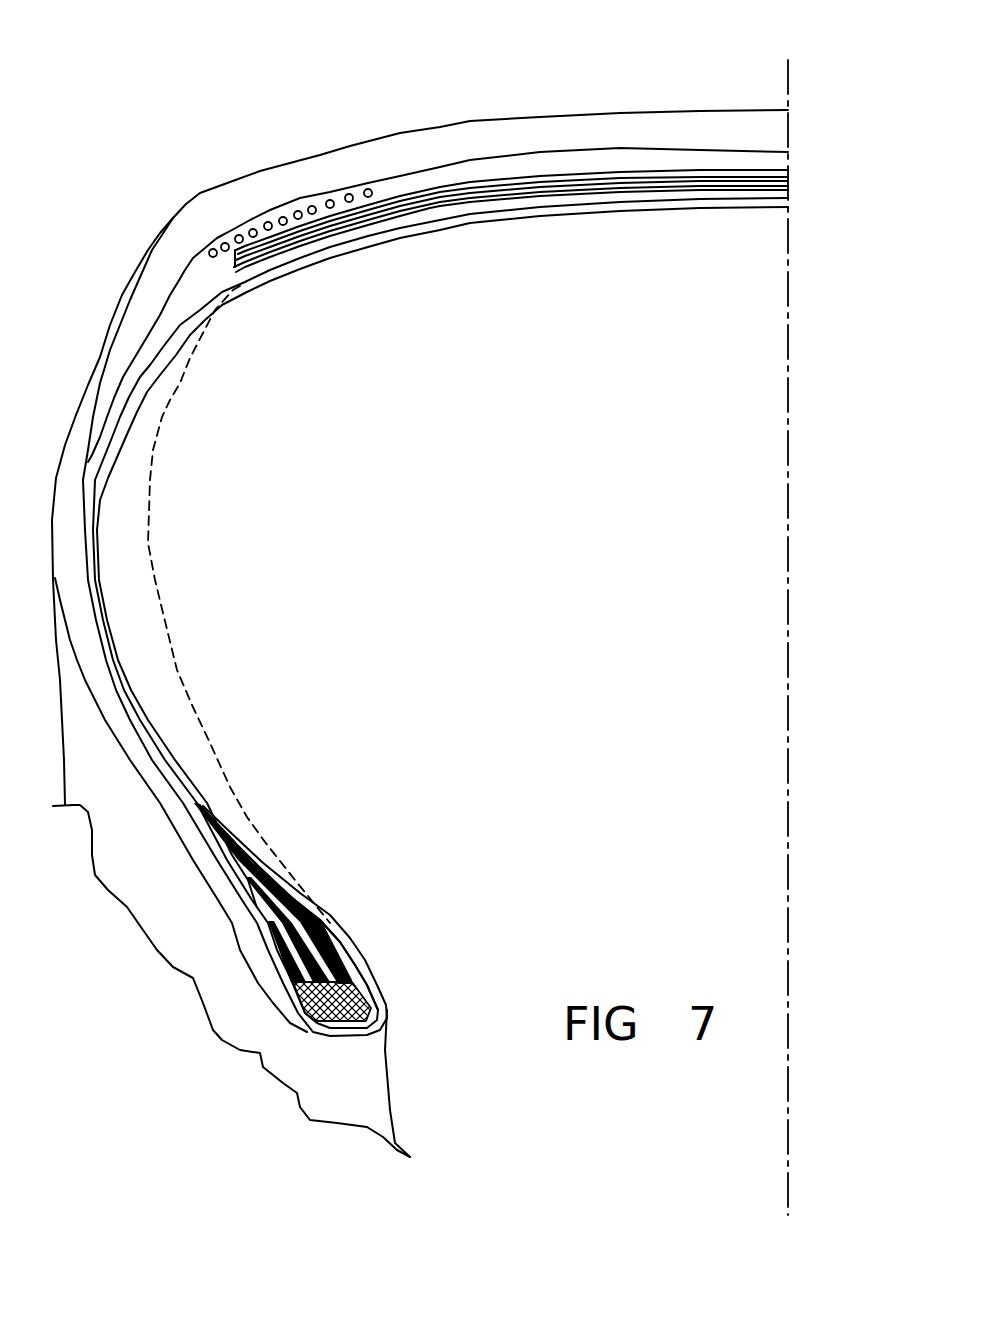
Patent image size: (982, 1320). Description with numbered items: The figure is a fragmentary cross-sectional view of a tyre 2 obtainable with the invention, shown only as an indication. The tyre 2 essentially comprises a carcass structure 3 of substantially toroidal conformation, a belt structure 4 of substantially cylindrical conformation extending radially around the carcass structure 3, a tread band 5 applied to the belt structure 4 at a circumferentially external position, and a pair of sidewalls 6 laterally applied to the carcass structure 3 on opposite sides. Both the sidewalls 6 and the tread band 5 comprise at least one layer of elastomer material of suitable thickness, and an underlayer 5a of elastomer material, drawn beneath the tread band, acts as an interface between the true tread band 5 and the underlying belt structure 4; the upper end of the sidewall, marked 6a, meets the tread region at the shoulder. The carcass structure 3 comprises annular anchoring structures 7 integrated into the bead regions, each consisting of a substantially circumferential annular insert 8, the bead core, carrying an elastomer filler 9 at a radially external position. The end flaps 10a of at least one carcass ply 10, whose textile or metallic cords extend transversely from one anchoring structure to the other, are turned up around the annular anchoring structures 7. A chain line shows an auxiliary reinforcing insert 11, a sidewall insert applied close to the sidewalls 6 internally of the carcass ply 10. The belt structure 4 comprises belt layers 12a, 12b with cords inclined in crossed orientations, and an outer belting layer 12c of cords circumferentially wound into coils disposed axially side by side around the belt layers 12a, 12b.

The tyre 2 is at (825, 633).
The carcass structure 3 is at (234, 826).
The belt structure 4 is at (667, 167).
The tread band 5 is at (507, 127).
The underlayer 5a is at (192, 281).
The sidewalls 6 is at (65, 470).
The sidewall rubber upper end 6a is at (108, 342).
The annular anchoring structures 7 is at (338, 929).
The annular insert 8 is at (362, 1000).
The elastomer filler 9 is at (290, 918).
The carcass ply 10 is at (138, 708).
The end flaps 10a is at (292, 983).
The auxiliary reinforcing inserts 11 is at (144, 546).
The belt layer 12a is at (455, 200).
The belt layer 12b is at (420, 190).
The outer belting layer 12c is at (300, 208).